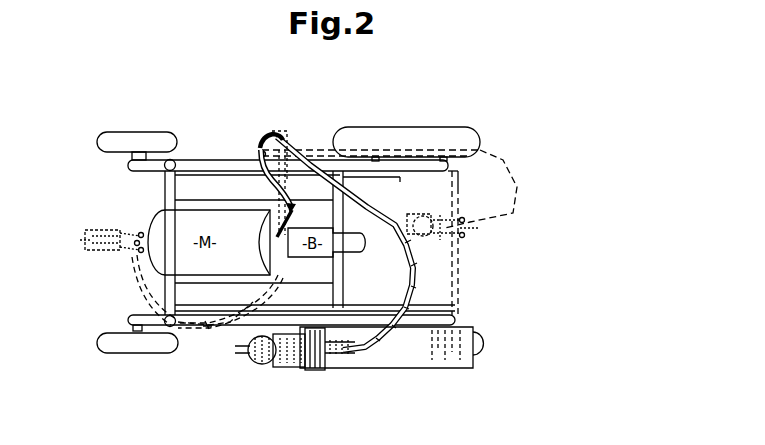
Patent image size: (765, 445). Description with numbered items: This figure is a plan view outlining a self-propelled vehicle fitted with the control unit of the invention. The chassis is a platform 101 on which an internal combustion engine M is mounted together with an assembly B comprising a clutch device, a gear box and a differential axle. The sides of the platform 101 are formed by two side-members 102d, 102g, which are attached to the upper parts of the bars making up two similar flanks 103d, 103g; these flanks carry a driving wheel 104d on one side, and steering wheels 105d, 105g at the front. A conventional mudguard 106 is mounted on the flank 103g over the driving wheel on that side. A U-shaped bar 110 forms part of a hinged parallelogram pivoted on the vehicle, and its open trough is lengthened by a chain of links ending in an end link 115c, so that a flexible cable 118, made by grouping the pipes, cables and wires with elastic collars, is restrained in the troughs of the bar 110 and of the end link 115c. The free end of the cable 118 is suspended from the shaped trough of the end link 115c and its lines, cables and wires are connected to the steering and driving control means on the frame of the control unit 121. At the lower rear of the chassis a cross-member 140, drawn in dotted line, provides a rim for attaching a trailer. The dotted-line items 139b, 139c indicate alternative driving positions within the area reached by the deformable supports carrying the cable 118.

The platform 101 is at (293, 243).
The side-member 102d is at (200, 161).
The side-member 102g is at (186, 328).
The flank 103d is at (228, 160).
The flank 103g is at (222, 333).
The driving wheel 104d is at (463, 129).
The steering wheel 105d is at (107, 131).
The steering wheel 105g is at (113, 355).
The mudguard 106 is at (424, 368).
The bar 110 is at (322, 150).
The end link 115c is at (420, 291).
The flexible cable 118 is at (258, 144).
The control unit 121 is at (283, 367).
The control assembly 139b is at (404, 219).
The control assembly 139c is at (95, 258).
The cross-member 140 is at (462, 274).